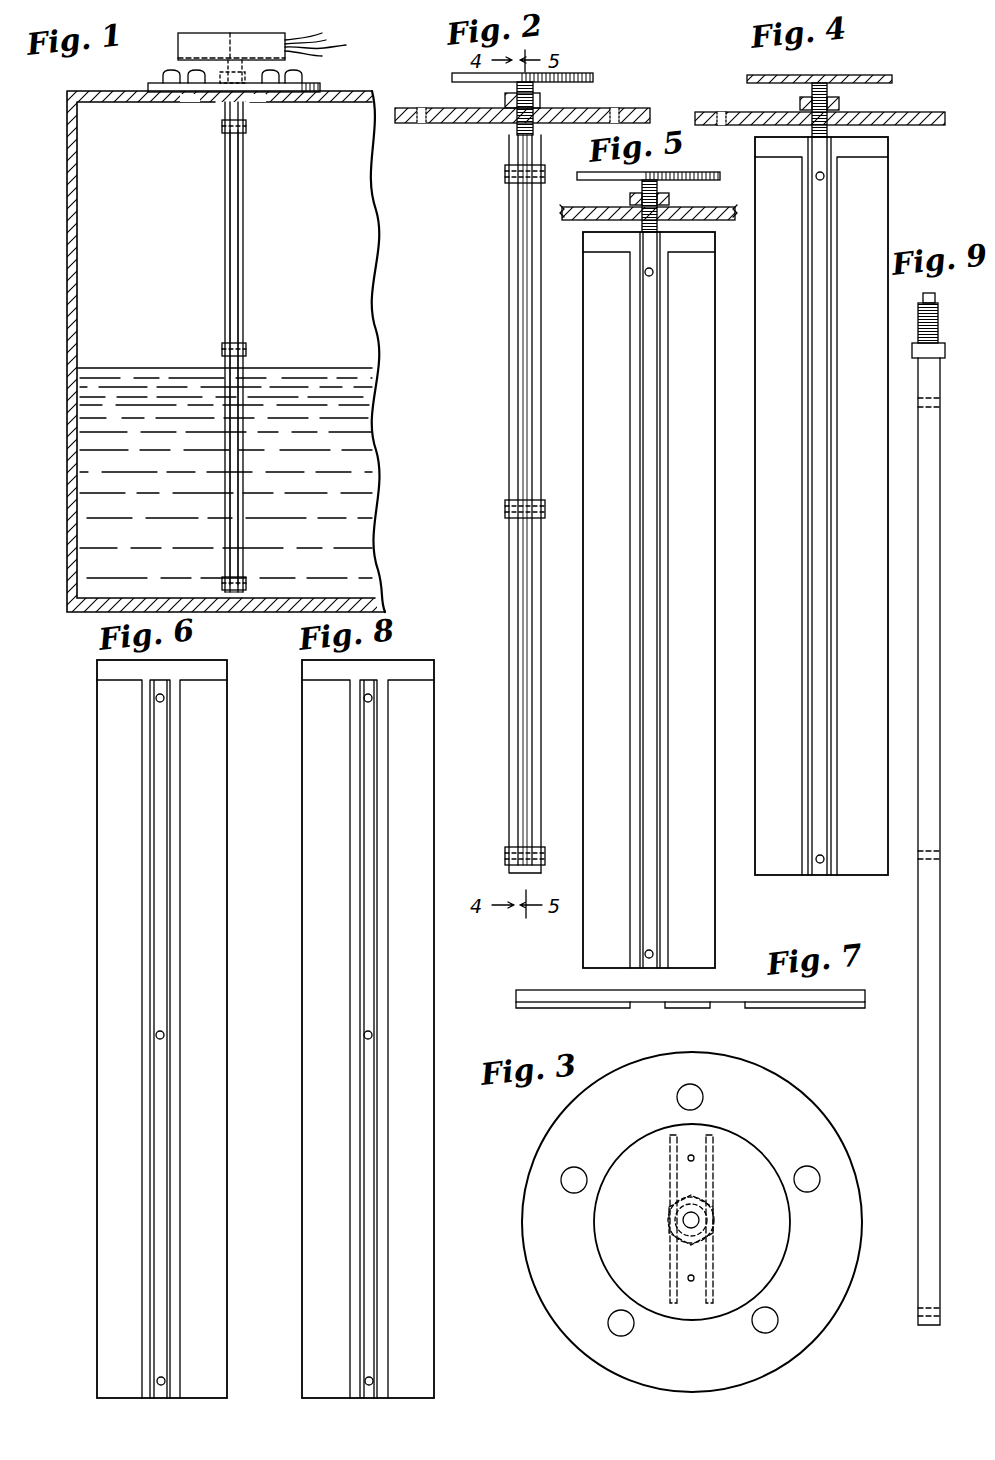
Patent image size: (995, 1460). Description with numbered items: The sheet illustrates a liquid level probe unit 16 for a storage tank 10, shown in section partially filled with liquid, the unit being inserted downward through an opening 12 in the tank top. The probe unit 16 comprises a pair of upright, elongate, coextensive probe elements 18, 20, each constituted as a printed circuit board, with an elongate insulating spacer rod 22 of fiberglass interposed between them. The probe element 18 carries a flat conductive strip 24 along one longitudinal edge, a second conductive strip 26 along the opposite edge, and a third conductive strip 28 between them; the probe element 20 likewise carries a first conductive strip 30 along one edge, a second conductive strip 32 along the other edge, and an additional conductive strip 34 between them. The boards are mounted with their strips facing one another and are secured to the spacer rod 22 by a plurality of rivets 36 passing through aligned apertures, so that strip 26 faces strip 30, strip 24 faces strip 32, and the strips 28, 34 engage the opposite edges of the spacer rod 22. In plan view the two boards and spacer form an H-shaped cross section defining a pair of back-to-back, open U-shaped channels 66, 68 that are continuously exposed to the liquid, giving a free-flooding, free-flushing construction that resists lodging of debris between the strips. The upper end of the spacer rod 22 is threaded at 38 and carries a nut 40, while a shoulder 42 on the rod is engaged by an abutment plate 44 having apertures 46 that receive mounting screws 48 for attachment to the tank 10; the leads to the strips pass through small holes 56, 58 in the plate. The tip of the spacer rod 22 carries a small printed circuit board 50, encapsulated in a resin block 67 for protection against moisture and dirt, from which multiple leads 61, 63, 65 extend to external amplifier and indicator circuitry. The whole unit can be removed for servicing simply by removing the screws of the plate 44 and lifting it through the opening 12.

In FIG. 1, the storage tank 10 is at (63, 303).
In FIG. 1, the opening 12 is at (268, 104).
In FIG. 1, the probe unit 16 is at (244, 347).
In FIG. 1, the probe element 18 is at (225, 306).
In FIG. 2, the probe element 18 is at (509, 384).
In FIG. 5, the probe element 18 is at (722, 400).
In FIG. 6, the probe element 18 is at (94, 977).
In FIG. 7, the probe element 18 is at (509, 1013).
In FIG. 3, the probe element 18 is at (670, 1185).
In FIG. 1, the probe element 20 is at (243, 306).
In FIG. 2, the probe element 20 is at (541, 384).
In FIG. 4, the probe element 20 is at (898, 206).
In FIG. 8, the probe element 20 is at (299, 967).
In FIG. 3, the probe element 20 is at (713, 1176).
In FIG. 1, the spacer rod 22 is at (230, 180).
In FIG. 2, the spacer rod 22 is at (516, 300).
In FIG. 5, the spacer rod 22 is at (655, 525).
In FIG. 4, the spacer rod 22 is at (816, 574).
In FIG. 9, the spacer rod 22 is at (918, 1048).
In FIG. 3, the spacer rod 22 is at (708, 1262).
In FIG. 5, the conductive strip 24 is at (693, 441).
In FIG. 6, the conductive strip 24 is at (202, 805).
In FIG. 7, the conductive strip 24 is at (822, 1010).
In FIG. 5, the second conductive strip 26 is at (606, 441).
In FIG. 6, the second conductive strip 26 is at (112, 806).
In FIG. 7, the second conductive strip 26 is at (586, 1010).
In FIG. 6, the third conductive strip 28 is at (158, 745).
In FIG. 7, the third conductive strip 28 is at (684, 1010).
In FIG. 4, the first conductive strip 30 is at (866, 230).
In FIG. 8, the first conductive strip 30 is at (410, 848).
In FIG. 4, the second conductive strip 32 is at (775, 312).
In FIG. 8, the second conductive strip 32 is at (310, 864).
In FIG. 8, the additional conductive strip 34 is at (368, 748).
In FIG. 1, the rivets 36 is at (222, 126).
In FIG. 2, the rivets 36 is at (505, 174).
In FIG. 1, the threaded portion 38 is at (232, 71).
In FIG. 2, the threaded portion 38 is at (534, 94).
In FIG. 5, the threaded portion 38 is at (658, 193).
In FIG. 4, the threaded portion 38 is at (828, 95).
In FIG. 9, the threaded portion 38 is at (916, 332).
In FIG. 1, the nut 40 is at (232, 77).
In FIG. 2, the nut 40 is at (505, 100).
In FIG. 5, the nut 40 is at (630, 195).
In FIG. 4, the nut 40 is at (800, 100).
In FIG. 9, the shoulder 42 is at (912, 350).
In FIG. 1, the abutment plate 44 is at (152, 88).
In FIG. 2, the abutment plate 44 is at (484, 126).
In FIG. 5, the abutment plate 44 is at (578, 222).
In FIG. 4, the abutment plate 44 is at (912, 128).
In FIG. 3, the abutment plate 44 is at (815, 1125).
In FIG. 2, the apertures 46 is at (422, 109).
In FIG. 4, the apertures 46 is at (722, 112).
In FIG. 3, the apertures 46 is at (682, 1100).
In FIG. 1, the mounting screws 48 is at (176, 68).
In FIG. 1, the printed circuit board 50 is at (229, 34).
In FIG. 2, the printed circuit board 50 is at (588, 73).
In FIG. 5, the printed circuit board 50 is at (712, 176).
In FIG. 4, the printed circuit board 50 is at (888, 80).
In FIG. 3, the hole 56 is at (694, 1157).
In FIG. 3, the hole 58 is at (688, 1278).
In FIG. 1, the lead 61 is at (306, 36).
In FIG. 1, the lead 63 is at (330, 48).
In FIG. 1, the lead 65 is at (318, 57).
In FIG. 3, the U-shaped channel 66 is at (698, 1136).
In FIG. 1, the resin block 67 is at (182, 38).
In FIG. 3, the U-shaped channel 68 is at (697, 1294).